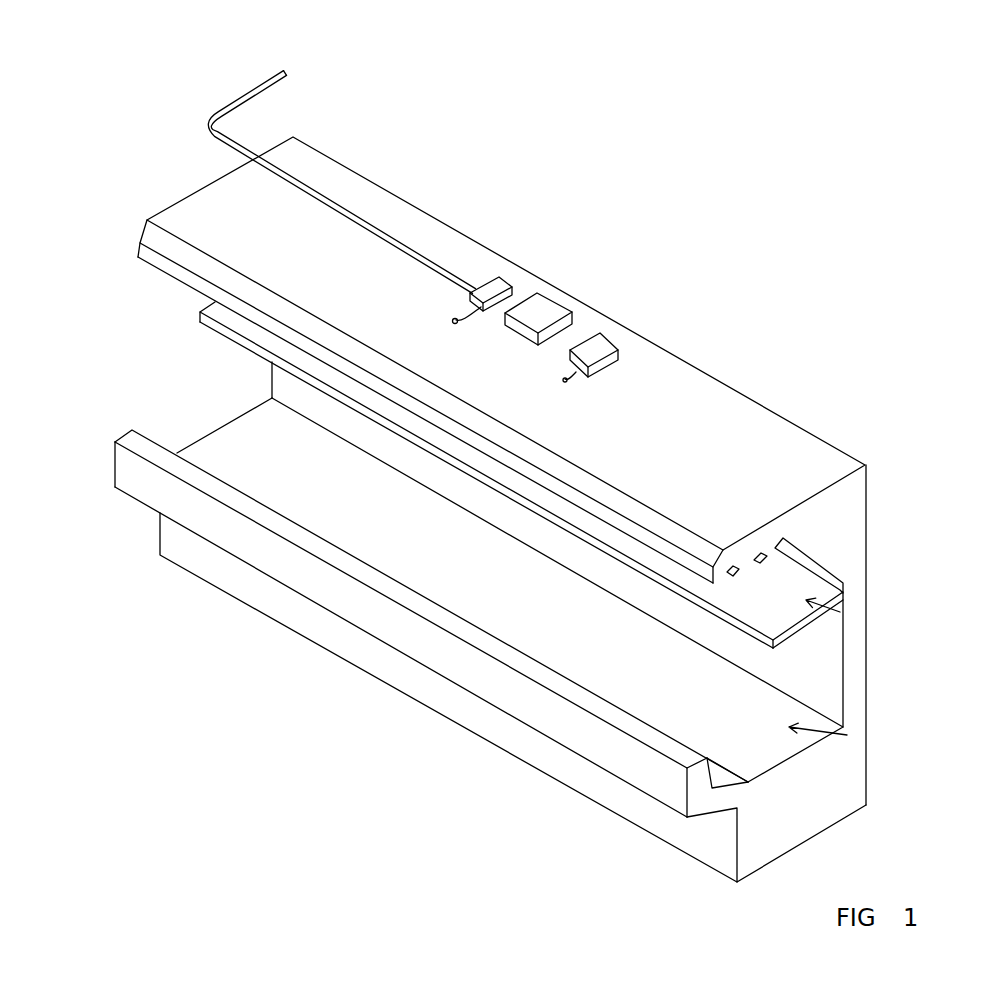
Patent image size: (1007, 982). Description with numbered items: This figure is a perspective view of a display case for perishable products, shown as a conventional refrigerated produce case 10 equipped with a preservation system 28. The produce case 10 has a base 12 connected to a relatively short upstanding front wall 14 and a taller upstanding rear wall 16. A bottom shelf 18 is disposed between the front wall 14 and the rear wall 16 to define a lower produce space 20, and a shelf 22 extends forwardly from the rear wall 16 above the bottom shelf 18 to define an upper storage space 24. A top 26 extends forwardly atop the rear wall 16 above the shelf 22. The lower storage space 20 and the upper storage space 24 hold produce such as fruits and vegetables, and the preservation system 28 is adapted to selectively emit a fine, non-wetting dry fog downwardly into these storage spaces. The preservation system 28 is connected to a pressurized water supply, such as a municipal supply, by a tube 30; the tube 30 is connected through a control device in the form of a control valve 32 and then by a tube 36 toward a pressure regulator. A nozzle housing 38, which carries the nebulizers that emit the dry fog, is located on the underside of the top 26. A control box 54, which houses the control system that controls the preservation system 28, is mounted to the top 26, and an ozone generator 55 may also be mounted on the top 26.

The refrigerated produce case 10 is at (315, 193).
The base 12 is at (200, 555).
The front wall 14 is at (592, 735).
The rear wall 16 is at (857, 665).
The bottom shelf 18 is at (228, 445).
The lower produce space 20 is at (823, 733).
The shelf 22 is at (805, 623).
The upper storage space 24 is at (847, 623).
The top 26 is at (831, 487).
The preservation system 28 is at (602, 225).
The tube 30 is at (341, 182).
The control valve 32 is at (488, 285).
The tube 36 is at (458, 313).
The nozzle housing 38 is at (780, 540).
The control box 54 is at (552, 313).
The ozone generator 55 is at (593, 357).